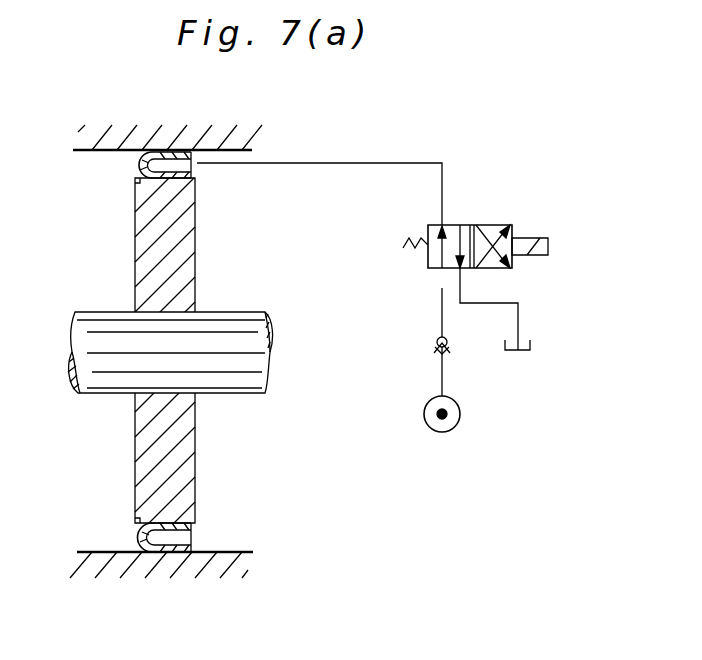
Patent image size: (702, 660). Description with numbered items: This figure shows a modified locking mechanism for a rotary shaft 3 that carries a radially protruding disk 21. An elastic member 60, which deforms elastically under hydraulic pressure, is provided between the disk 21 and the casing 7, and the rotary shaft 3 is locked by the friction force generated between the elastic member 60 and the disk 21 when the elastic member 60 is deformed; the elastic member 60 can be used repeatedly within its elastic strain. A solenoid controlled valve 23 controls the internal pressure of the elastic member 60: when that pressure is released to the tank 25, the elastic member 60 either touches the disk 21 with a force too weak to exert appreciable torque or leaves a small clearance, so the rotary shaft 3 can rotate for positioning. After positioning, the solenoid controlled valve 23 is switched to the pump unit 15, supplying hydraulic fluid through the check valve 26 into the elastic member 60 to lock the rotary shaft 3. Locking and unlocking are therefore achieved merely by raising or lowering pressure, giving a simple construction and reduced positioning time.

The casing 7 is at (93, 152).
The elastic member 60 is at (132, 165).
The disk 21 is at (147, 262).
The rotary shaft 3 is at (100, 394).
The solenoid controlled valve 23 is at (487, 223).
The check valve 26 is at (448, 350).
The tank 25 is at (521, 352).
The pump unit 15 is at (460, 426).